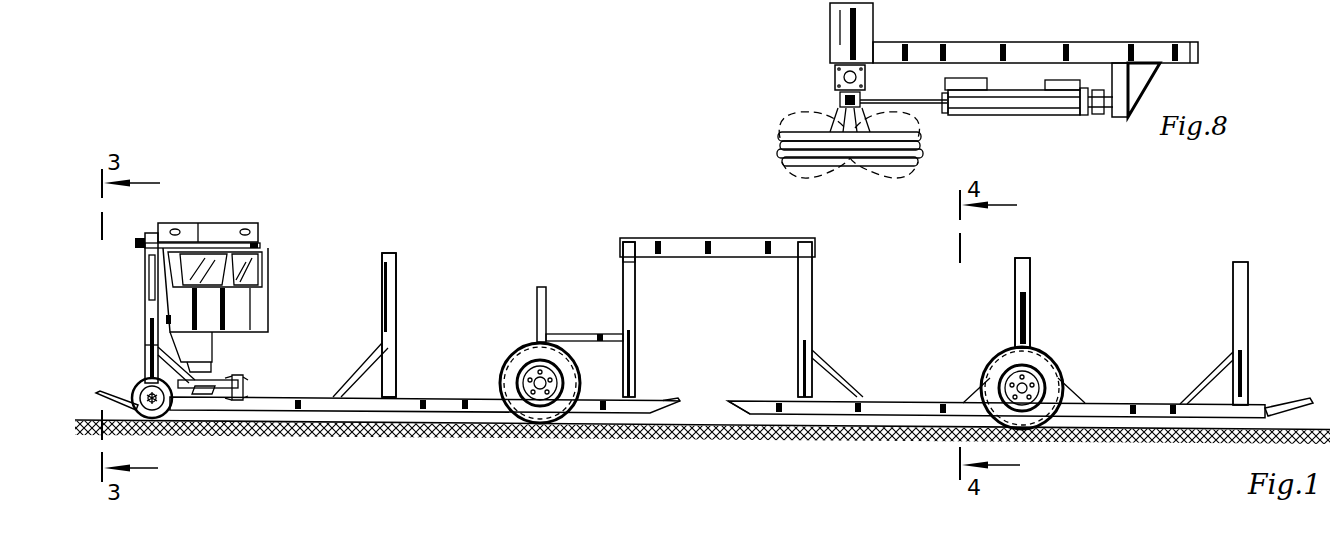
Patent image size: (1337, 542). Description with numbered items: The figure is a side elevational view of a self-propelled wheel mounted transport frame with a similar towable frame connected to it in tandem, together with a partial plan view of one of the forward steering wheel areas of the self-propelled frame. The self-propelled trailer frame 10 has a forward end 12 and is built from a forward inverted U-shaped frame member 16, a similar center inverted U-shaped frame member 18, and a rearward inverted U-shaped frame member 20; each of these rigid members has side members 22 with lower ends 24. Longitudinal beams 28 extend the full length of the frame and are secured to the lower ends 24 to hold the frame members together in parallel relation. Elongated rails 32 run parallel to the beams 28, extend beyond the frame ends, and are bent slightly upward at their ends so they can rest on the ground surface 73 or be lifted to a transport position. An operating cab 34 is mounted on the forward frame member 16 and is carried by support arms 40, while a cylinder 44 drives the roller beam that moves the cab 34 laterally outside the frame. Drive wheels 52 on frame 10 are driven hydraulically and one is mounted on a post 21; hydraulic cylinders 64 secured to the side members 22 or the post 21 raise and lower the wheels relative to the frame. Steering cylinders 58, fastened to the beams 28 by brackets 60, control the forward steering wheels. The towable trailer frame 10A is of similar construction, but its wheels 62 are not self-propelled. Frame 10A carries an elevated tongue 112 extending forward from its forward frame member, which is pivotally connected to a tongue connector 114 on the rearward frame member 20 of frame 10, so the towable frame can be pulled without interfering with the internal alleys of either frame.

In FIG. 1, the self-propelled trailer frame 10 is at (456, 306).
In FIG. 1, the towable trailer frame 10A is at (1103, 336).
In FIG. 1, the forward end 12 is at (143, 282).
In FIG. 8, the forward end 12 is at (882, 19).
In FIG. 1, the forward inverted U-shaped frame member 16 is at (147, 266).
In FIG. 1, the center inverted U-shaped frame member 18 is at (402, 266).
In FIG. 1, the rearward inverted U-shaped frame member 20 is at (620, 275).
In FIG. 1, the post 21 is at (526, 355).
In FIG. 1, the side members 22 is at (392, 281).
In FIG. 1, the lower ends 24 is at (393, 393).
In FIG. 1, the longitudinal beams 28 is at (704, 381).
In FIG. 8, the longitudinal beams 28 is at (988, 42).
In FIG. 1, the elongated rails 32 is at (748, 402).
In FIG. 1, the operating cab 34 is at (266, 247).
In FIG. 1, the support arms 40 is at (258, 244).
In FIG. 1, the cylinder 44 is at (135, 244).
In FIG. 1, the drive wheels 52 is at (528, 358).
In FIG. 1, the steering cylinders 58 is at (143, 384).
In FIG. 8, the steering cylinders 58 is at (923, 140).
In FIG. 1, the brackets 60 is at (245, 384).
In FIG. 8, the brackets 60 is at (1112, 112).
In FIG. 1, the wheels 62 is at (992, 368).
In FIG. 1, the hydraulic cylinders 64 is at (146, 346).
In FIG. 8, the hydraulic cylinders 64 is at (835, 78).
In FIG. 1, the ground surface 73 is at (713, 427).
In FIG. 1, the elevated tongue 112 is at (626, 240).
In FIG. 1, the tongue connector 114 is at (624, 251).